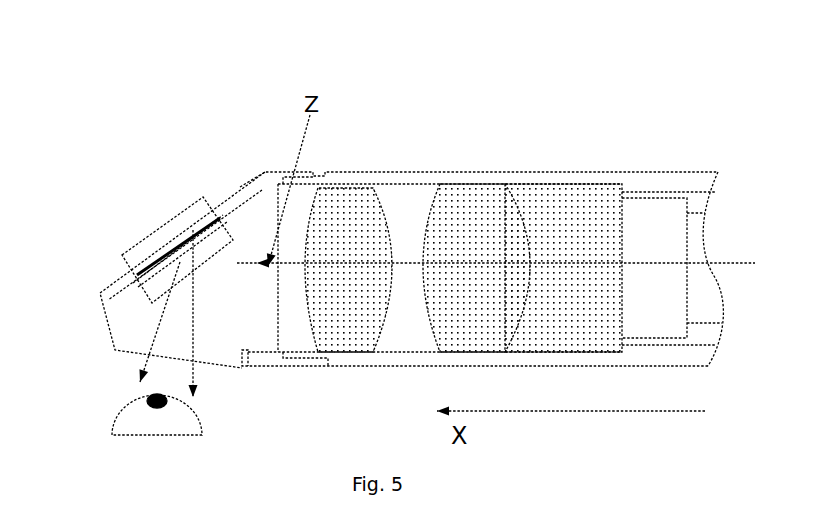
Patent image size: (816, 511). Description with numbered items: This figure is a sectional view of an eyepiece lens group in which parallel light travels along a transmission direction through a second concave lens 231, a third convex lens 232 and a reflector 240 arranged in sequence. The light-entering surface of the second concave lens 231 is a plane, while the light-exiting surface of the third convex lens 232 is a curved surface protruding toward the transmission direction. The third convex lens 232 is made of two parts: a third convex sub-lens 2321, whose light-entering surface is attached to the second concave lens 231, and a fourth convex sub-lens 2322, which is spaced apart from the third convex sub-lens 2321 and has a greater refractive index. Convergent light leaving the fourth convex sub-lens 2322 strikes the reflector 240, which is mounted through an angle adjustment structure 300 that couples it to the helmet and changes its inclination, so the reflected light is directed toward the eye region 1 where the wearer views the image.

The eye region 1 is at (130, 422).
The second concave lens 231 is at (570, 204).
The third convex lens 232 is at (490, 90).
The third convex sub-lens 2321 is at (472, 204).
The fourth convex sub-lens 2322 is at (340, 210).
The reflector 240 is at (193, 230).
The angle adjustment structure 300 is at (140, 228).